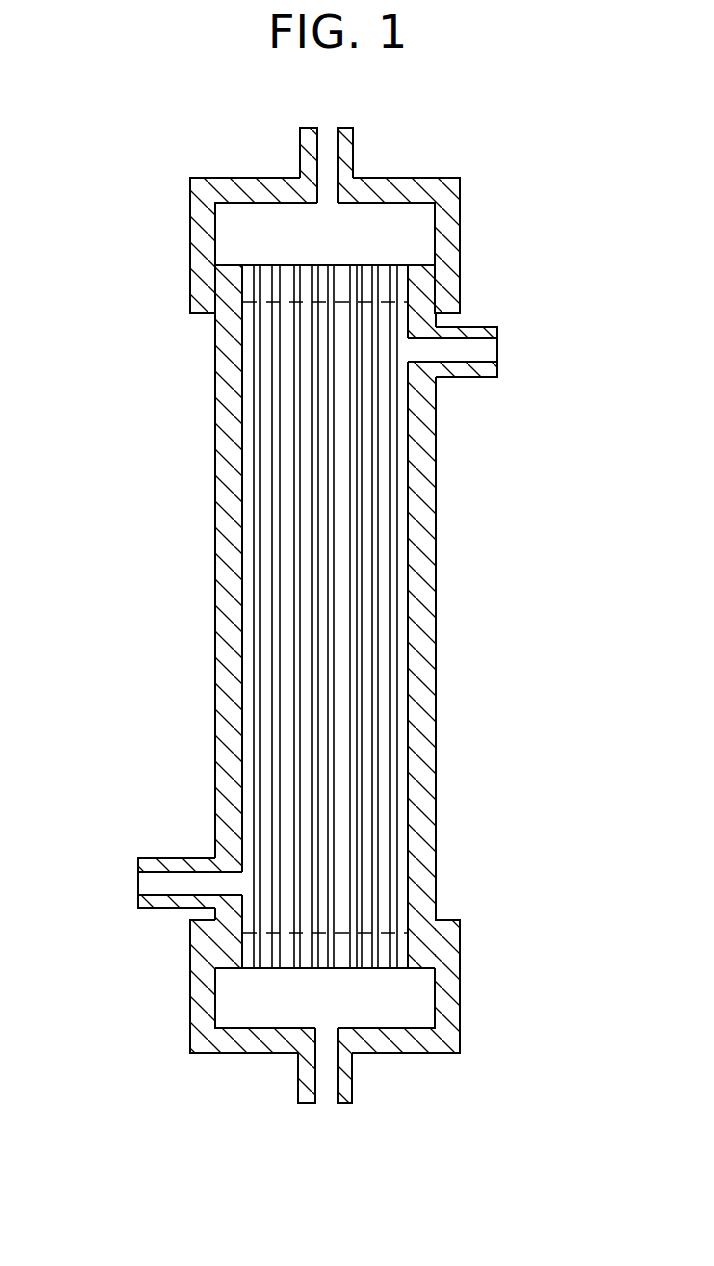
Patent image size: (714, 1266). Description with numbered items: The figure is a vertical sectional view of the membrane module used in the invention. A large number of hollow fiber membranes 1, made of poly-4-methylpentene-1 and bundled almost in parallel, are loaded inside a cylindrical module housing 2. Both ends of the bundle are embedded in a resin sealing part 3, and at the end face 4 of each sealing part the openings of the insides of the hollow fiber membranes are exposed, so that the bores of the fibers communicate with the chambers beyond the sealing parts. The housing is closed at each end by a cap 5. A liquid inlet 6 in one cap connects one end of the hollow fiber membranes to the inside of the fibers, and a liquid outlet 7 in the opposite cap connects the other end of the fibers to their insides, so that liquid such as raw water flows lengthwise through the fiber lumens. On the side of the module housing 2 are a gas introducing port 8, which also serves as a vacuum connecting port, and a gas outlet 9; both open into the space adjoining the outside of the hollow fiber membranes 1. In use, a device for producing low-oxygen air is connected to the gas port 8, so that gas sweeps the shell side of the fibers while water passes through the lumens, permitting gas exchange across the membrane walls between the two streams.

The hollow fiber membrane 1 is at (370, 668).
The module housing 2 is at (437, 735).
The resin sealing part 3 is at (385, 285).
The end face 4 is at (347, 258).
The cap 5 is at (422, 190).
The liquid inlet 6 is at (330, 1104).
The liquid outlet 7 is at (328, 128).
The vacuum connecting port or gas introducing port 8 is at (497, 352).
The gas outlet 9 is at (137, 882).